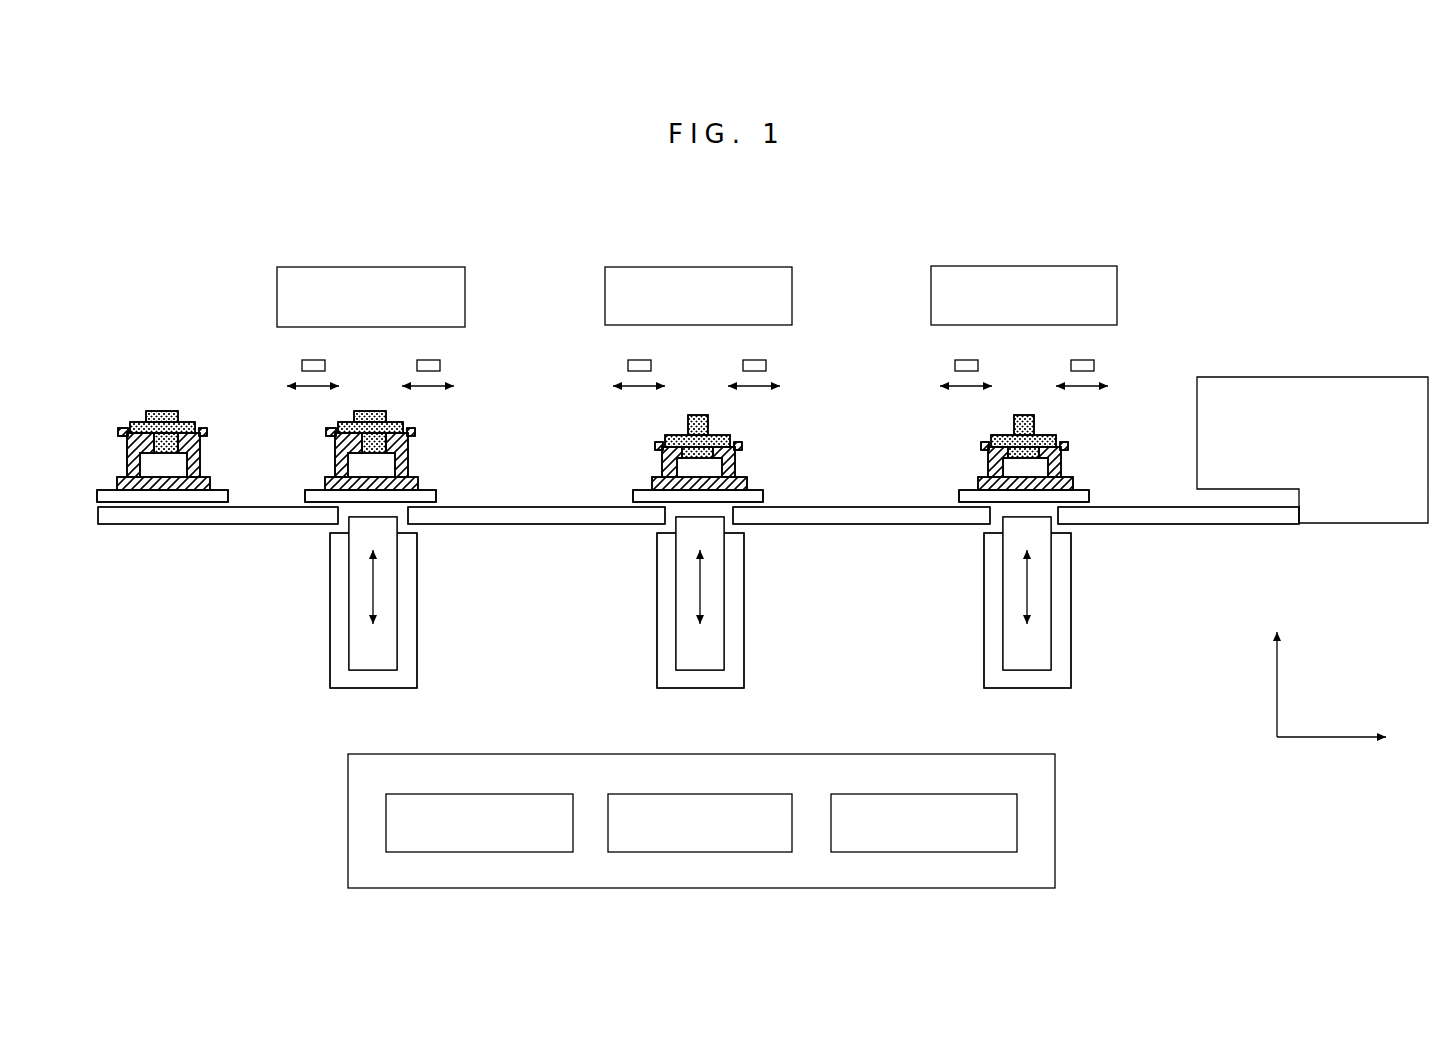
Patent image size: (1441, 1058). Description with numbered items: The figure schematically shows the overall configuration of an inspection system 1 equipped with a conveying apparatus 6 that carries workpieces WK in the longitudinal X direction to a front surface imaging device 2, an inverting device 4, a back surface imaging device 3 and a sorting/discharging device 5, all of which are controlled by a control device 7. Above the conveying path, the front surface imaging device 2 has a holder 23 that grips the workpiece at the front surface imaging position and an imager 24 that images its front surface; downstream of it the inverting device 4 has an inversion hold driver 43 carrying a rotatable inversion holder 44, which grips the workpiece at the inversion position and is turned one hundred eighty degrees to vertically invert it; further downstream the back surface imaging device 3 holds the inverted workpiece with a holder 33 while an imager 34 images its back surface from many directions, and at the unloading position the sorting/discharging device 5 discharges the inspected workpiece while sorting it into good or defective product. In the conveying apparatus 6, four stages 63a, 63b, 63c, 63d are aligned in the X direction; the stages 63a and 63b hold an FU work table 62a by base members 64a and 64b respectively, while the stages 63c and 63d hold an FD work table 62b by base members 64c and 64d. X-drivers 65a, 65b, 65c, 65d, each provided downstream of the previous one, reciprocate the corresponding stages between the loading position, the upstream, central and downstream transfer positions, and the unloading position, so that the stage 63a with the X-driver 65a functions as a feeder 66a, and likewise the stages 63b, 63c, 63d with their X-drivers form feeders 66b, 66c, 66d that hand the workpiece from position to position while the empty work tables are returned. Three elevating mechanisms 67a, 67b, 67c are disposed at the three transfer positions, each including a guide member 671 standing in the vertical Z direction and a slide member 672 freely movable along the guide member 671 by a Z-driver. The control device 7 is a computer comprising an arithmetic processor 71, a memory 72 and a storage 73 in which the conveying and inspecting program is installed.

The inspection system 1 is at (1226, 164).
The front surface imaging device 2 is at (417, 242).
The back surface imaging device 3 is at (1078, 242).
The inverting device 4 is at (742, 242).
The sorting/discharging device 5 is at (1330, 388).
The conveying apparatus 6 is at (214, 689).
The control device 7 is at (1055, 806).
The holder 23 is at (296, 351).
The imager 24 is at (465, 295).
The holder 33 is at (950, 352).
The imager 34 is at (1117, 292).
The inversion hold driver 43 is at (792, 293).
The inversion holder 44 is at (626, 352).
The FU work table 62a is at (188, 490).
The FD work table 62b is at (737, 455).
The stage 63a is at (282, 620).
The stage 63b is at (503, 425).
The stage 63c is at (837, 423).
The stage 63d is at (1140, 423).
The base member 64a is at (219, 498).
The base member 64b is at (434, 497).
The base member 64c is at (762, 497).
The base member 64d is at (1088, 497).
The X-driver 65a is at (110, 526).
The X-driver 65b is at (563, 526).
The X-driver 65c is at (875, 526).
The X-driver 65d is at (1187, 526).
The feeder 66a is at (149, 685).
The feeder 66b is at (532, 576).
The feeder 66c is at (862, 574).
The feeder 66d is at (1164, 573).
The elevating mechanism 67a is at (317, 664).
The elevating mechanism 67b is at (644, 633).
The elevating mechanism 67c is at (969, 664).
The arithmetic processor 71 is at (483, 794).
The memory 72 is at (762, 794).
The storage 73 is at (990, 794).
The guide member 671 is at (408, 665).
The slide member 672 is at (397, 597).